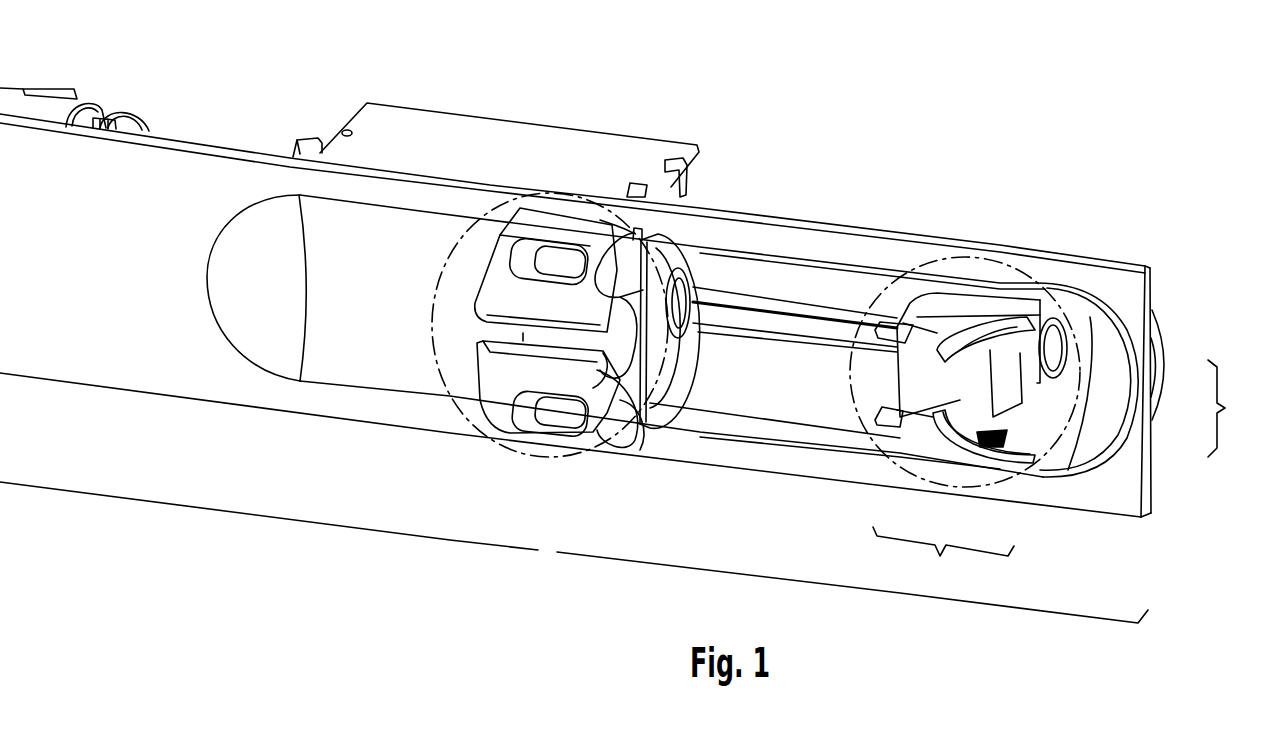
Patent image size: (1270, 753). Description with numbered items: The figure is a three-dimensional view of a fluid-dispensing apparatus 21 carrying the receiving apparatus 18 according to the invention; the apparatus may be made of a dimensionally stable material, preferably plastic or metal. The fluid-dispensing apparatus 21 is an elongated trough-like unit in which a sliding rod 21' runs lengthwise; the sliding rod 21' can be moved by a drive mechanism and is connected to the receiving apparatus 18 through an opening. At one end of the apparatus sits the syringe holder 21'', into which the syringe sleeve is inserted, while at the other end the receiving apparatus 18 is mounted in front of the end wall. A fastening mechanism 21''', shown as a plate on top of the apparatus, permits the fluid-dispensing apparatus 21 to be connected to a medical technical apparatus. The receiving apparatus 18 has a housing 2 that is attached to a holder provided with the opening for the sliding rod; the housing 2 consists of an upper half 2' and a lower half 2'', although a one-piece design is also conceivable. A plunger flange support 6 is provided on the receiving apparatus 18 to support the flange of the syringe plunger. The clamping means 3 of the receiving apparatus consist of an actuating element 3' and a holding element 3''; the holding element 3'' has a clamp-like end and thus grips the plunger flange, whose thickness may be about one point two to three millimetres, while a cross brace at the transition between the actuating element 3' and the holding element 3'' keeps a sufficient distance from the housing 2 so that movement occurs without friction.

The fluid-dispensing apparatus 21 is at (582, 355).
The sliding rod 21' is at (795, 249).
The syringe holder 21'' is at (597, 297).
The fastening mechanism 21''' is at (496, 117).
The receiving apparatus 18 is at (1018, 267).
The plunger flange support 6 is at (1055, 343).
The housing 2 is at (1227, 408).
The upper half of the housing 2' is at (1068, 384).
The lower half of the housing 2'' is at (1054, 355).
The clamping means 3 is at (943, 561).
The actuating element of the clamping means 3' is at (984, 481).
The holding element of the clamping means 3'' is at (906, 431).